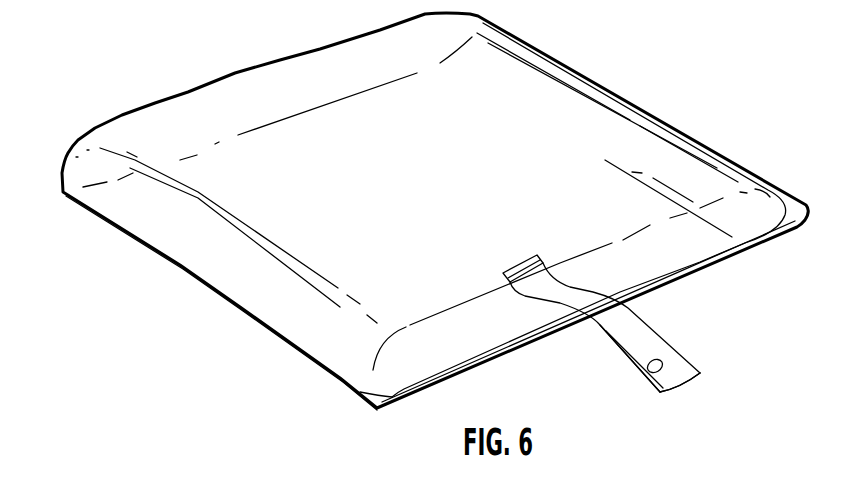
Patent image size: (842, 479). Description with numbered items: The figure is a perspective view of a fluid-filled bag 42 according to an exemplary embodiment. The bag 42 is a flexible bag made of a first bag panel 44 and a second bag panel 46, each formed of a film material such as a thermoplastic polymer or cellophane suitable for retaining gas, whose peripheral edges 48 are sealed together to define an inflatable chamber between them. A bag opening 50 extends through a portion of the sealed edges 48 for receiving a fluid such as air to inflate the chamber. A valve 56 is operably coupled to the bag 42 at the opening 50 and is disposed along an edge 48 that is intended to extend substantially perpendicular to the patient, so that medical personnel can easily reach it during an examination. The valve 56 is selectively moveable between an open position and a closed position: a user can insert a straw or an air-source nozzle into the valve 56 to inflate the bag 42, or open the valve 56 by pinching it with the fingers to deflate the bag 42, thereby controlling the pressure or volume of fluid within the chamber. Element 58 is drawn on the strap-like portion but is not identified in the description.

The bag 42 is at (627, 79).
The first bag panel 44 is at (377, 394).
The second bag panel 46 is at (177, 230).
The peripheral edges 48 is at (240, 310).
The bag opening 50 is at (613, 324).
The valve 56 is at (614, 354).
The hole in strap 58 is at (661, 363).